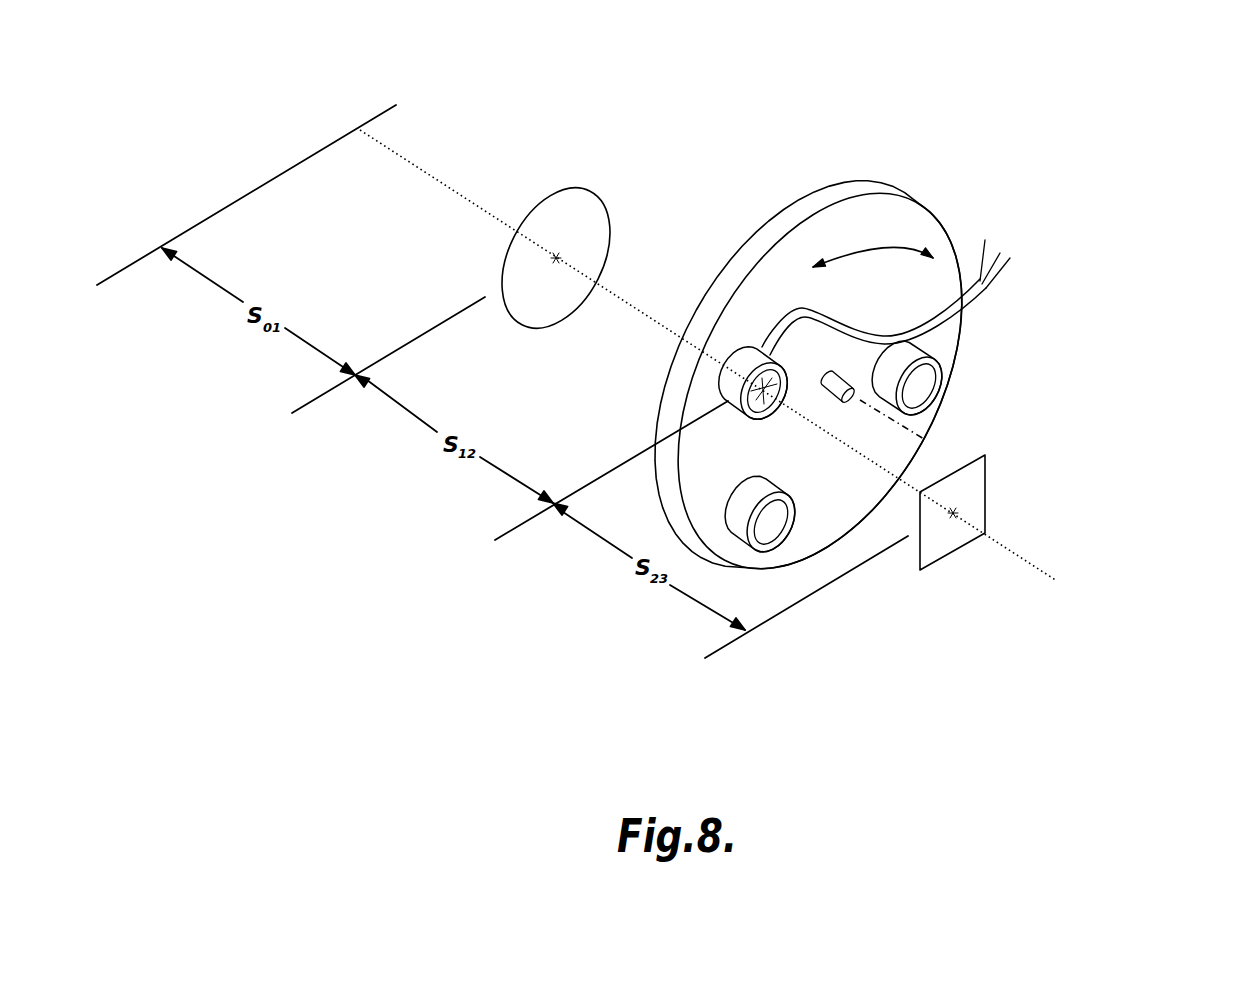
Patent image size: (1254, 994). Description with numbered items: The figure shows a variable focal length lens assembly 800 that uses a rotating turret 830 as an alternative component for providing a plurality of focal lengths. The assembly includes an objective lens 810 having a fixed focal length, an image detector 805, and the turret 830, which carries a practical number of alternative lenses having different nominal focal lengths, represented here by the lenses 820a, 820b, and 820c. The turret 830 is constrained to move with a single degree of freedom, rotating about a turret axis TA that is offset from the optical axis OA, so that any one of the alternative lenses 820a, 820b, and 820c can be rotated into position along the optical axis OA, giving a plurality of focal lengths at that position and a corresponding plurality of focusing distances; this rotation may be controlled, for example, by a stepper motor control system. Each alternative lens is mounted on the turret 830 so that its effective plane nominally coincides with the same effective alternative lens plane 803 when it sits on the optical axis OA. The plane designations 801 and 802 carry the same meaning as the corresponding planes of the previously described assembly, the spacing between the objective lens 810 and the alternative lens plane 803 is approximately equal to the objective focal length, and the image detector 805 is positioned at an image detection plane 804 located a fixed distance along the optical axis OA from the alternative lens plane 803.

The variable focal length lens assembly 800 is at (1088, 118).
The plane designation 801 is at (112, 280).
The plane designation 802 is at (303, 405).
The effective alternative lens plane 803 is at (500, 535).
The image detection plane 804 is at (712, 655).
The image detector 805 is at (975, 495).
The objective lens 810 is at (579, 208).
The alternative lens 820a is at (926, 378).
The alternative lens 820b is at (770, 537).
The alternative lens 820c is at (753, 391).
The rotating turret 830 is at (903, 223).
The turret axis TA is at (937, 446).
The optical axis OA is at (1043, 573).